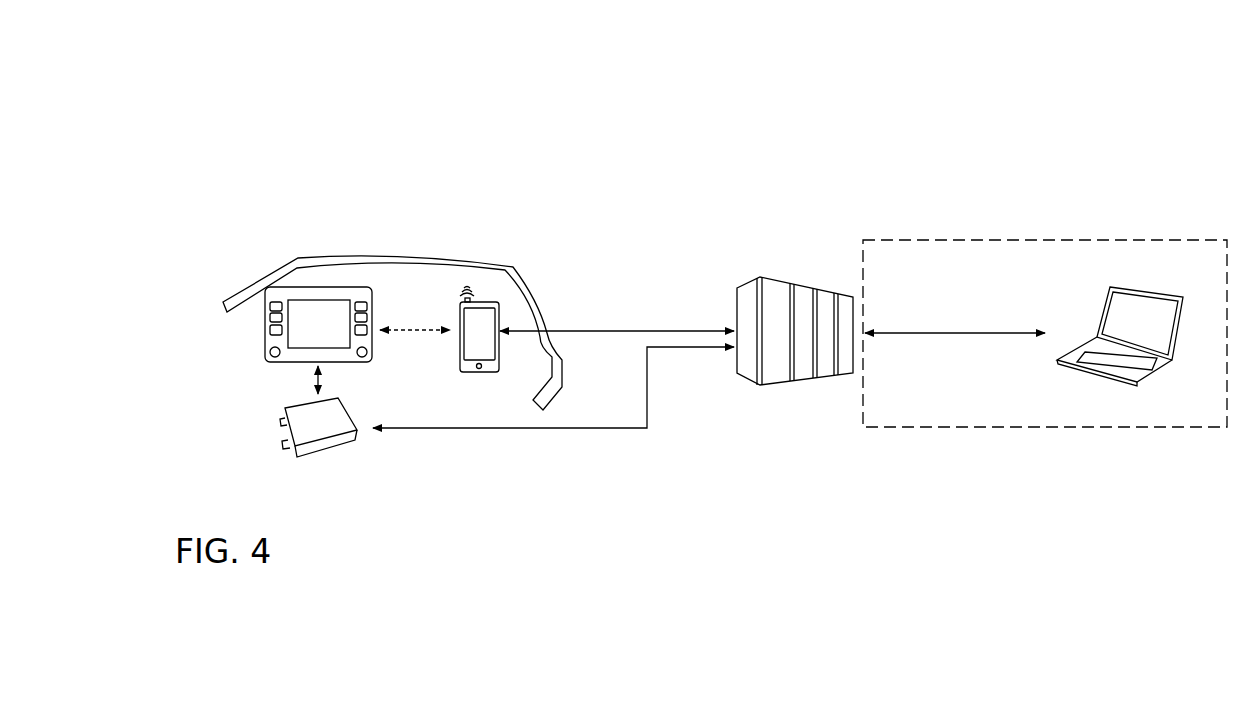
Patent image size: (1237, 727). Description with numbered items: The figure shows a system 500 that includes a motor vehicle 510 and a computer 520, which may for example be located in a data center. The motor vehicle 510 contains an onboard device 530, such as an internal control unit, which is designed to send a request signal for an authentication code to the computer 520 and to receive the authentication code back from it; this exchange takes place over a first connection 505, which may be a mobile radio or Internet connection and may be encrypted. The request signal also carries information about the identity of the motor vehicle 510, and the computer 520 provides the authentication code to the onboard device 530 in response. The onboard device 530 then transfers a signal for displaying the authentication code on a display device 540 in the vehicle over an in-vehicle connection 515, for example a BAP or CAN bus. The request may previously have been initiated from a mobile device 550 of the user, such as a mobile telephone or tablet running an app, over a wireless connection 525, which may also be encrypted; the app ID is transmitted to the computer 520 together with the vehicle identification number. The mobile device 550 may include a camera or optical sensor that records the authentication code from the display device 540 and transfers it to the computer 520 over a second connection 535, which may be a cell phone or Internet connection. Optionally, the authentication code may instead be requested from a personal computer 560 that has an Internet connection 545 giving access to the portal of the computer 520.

The system 500 is at (1124, 120).
The first connection 505 is at (513, 428).
The motor vehicle 510 is at (238, 295).
The in-vehicle connection 515 is at (318, 380).
The computer 520 is at (803, 287).
The wireless connection 525 is at (413, 330).
The onboard device 530 is at (325, 450).
The second connection 535 is at (617, 330).
The display device 540 is at (317, 288).
The Internet connection 545 is at (927, 333).
The mobile device 550 is at (483, 303).
The personal computer 560 is at (1147, 290).